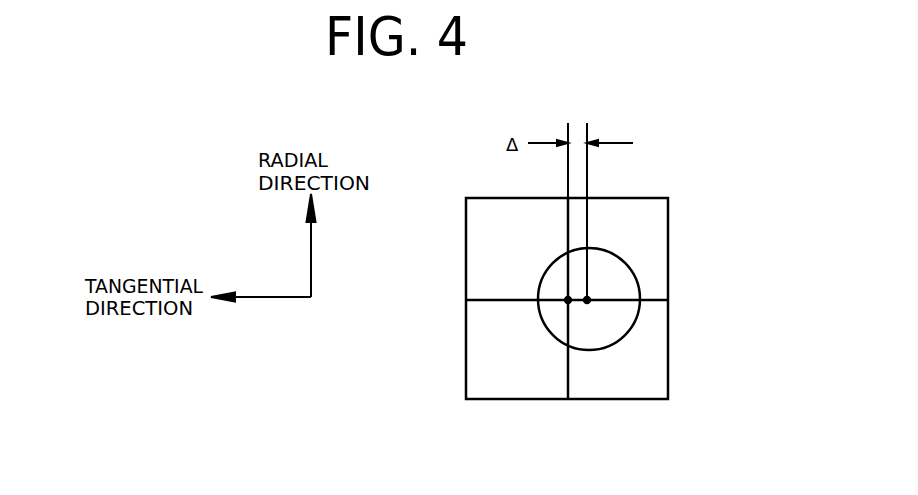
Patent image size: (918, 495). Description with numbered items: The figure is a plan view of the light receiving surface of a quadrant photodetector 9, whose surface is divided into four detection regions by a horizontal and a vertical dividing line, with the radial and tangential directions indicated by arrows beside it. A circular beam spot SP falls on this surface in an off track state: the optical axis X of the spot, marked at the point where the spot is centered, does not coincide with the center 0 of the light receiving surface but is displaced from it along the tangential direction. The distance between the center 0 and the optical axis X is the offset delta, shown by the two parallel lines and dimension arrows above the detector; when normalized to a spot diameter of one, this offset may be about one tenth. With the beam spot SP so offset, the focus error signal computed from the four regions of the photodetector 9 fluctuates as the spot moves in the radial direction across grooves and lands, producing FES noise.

The quadrant photodetector 9 is at (483, 400).
The beam spot SP is at (541, 281).
The center of the light receiving surface 0 is at (568, 300).
The optical axis of the spot X is at (587, 300).